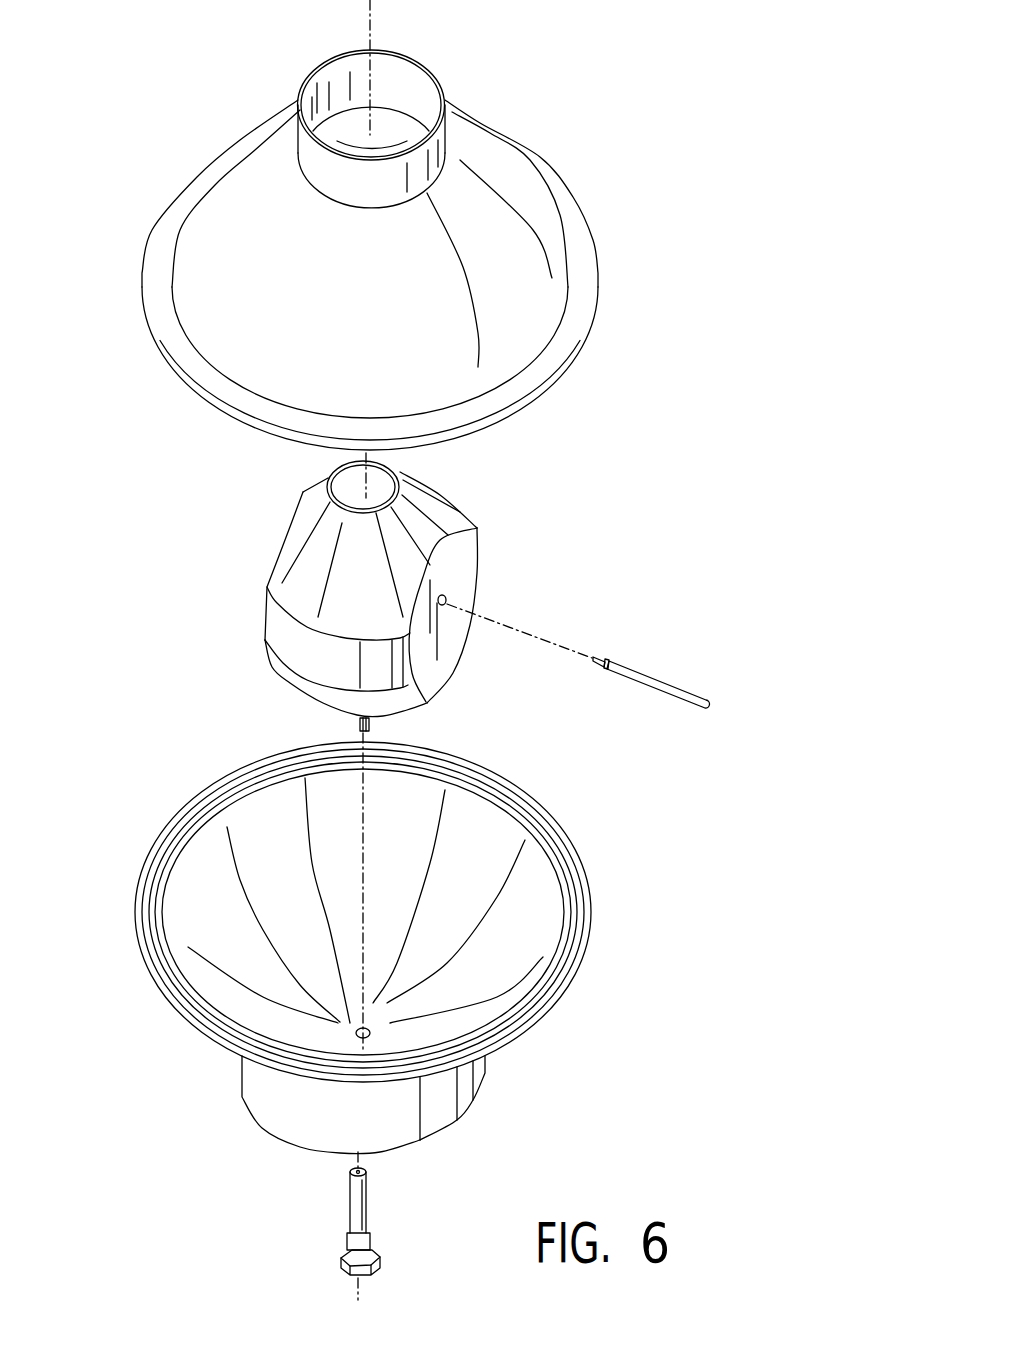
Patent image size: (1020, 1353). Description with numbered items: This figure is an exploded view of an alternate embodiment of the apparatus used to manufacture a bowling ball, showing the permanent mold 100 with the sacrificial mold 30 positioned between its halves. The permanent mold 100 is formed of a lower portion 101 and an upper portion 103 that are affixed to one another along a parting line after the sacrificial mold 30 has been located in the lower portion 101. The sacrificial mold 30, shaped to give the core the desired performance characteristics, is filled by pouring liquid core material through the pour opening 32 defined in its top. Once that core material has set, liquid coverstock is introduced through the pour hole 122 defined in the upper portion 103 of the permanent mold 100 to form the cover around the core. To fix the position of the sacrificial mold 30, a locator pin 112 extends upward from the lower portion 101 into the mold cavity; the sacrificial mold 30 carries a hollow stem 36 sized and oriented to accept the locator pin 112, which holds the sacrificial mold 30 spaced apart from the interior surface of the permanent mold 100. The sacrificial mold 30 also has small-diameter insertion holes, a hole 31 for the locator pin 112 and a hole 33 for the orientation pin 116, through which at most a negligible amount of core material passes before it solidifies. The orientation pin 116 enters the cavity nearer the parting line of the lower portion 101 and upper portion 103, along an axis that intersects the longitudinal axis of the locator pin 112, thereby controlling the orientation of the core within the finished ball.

The permanent mold 100 is at (540, 158).
The lower portion of permanent mold 101 is at (553, 1005).
The upper portion of permanent mold 103 is at (600, 287).
The pour hole 122 is at (388, 83).
The sacrificial mold 30 is at (477, 528).
The pour opening 32 is at (380, 490).
The hole 33 is at (448, 598).
The stem 36 is at (357, 727).
The orientation pin 116 is at (675, 687).
The hole 31 is at (356, 1034).
The locator pin 112 is at (357, 1210).